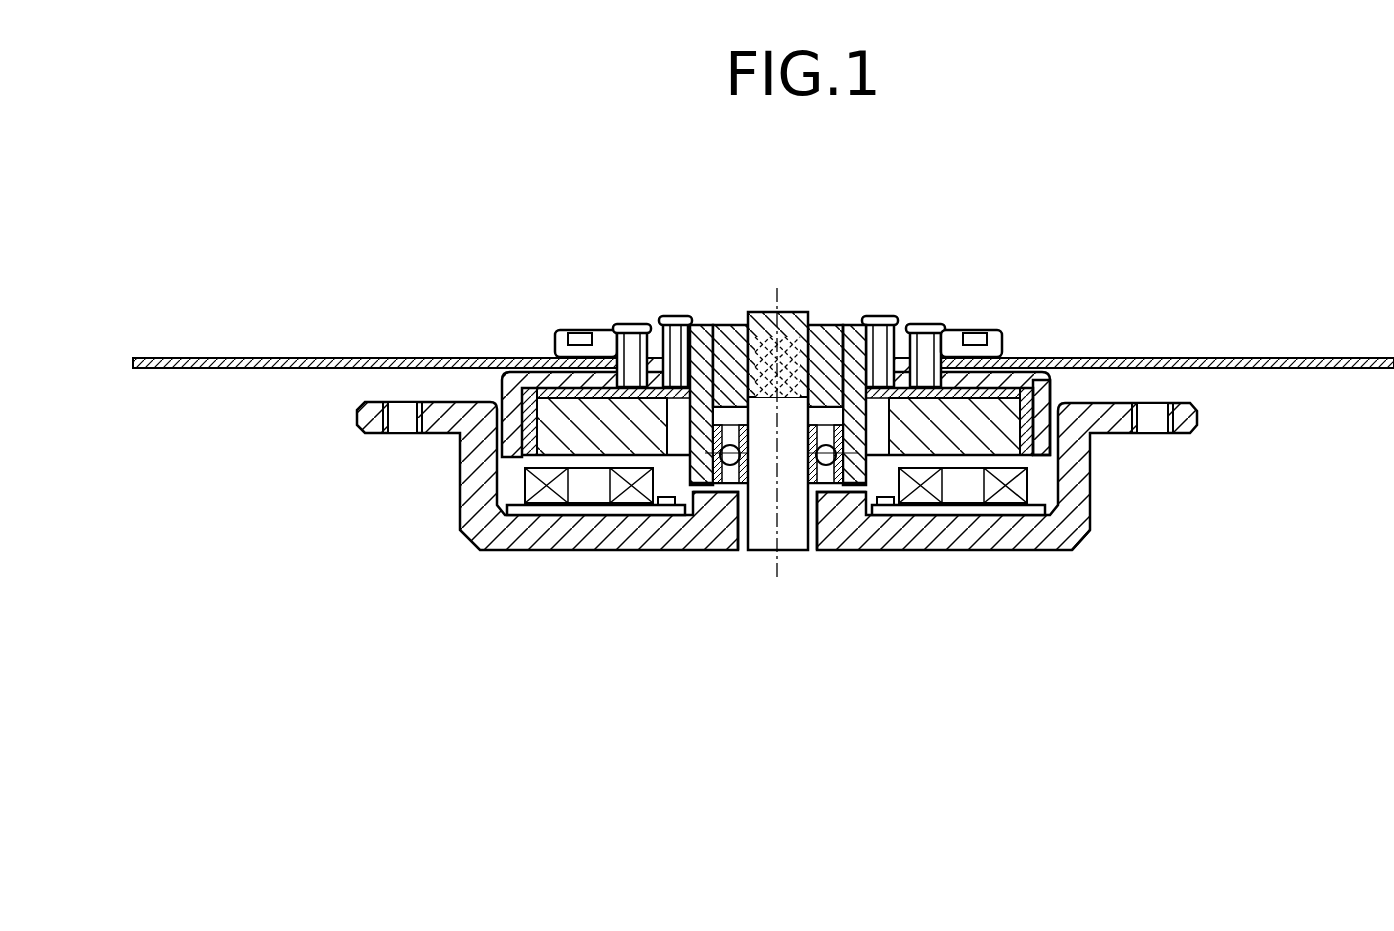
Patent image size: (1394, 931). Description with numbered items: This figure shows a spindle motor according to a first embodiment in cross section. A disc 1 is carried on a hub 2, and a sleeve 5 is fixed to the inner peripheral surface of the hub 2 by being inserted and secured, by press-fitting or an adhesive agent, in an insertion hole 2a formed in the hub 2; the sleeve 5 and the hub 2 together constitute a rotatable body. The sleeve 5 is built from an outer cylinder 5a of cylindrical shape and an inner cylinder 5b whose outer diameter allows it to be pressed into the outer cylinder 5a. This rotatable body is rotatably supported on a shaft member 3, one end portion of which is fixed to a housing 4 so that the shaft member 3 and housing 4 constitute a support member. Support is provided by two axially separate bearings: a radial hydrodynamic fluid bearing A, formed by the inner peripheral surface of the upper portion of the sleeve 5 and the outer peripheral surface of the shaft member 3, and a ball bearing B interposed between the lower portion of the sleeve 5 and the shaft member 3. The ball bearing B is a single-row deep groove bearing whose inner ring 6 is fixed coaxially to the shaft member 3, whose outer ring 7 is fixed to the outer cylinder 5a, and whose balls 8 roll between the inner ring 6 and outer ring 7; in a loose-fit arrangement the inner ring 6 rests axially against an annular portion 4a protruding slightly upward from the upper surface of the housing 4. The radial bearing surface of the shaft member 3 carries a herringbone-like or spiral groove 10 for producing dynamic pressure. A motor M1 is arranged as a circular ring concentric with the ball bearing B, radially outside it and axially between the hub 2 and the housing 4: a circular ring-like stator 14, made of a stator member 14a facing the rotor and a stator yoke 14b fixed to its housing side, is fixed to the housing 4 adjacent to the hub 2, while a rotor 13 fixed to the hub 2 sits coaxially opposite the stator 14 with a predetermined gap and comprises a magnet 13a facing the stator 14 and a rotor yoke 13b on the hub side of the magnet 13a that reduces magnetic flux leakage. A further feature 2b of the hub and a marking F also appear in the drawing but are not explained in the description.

The disc 1 is at (1386, 356).
The hub 2 is at (1017, 372).
The insertion hole 2a is at (851, 326).
The outer wall of rotor yoke 2b is at (1046, 372).
The shaft member 3 is at (806, 313).
The housing 4 is at (627, 551).
The annular portion 4a is at (738, 494).
The sleeve 5 is at (658, 232).
The outer cylinder 5a is at (692, 324).
The inner cylinder 5b is at (722, 324).
The inner ring 6 is at (813, 440).
The outer ring 7 is at (843, 470).
The balls 8 is at (827, 463).
The groove for producing dynamic pressure 10 is at (776, 288).
The rotor 13 is at (1191, 455).
The magnet 13a is at (1028, 472).
The rotor yoke 13b is at (1025, 455).
The stator 14 is at (1191, 545).
The stator member 14a is at (1046, 513).
The stator yoke 14b is at (1073, 553).
The hydrodynamic fluid bearing A is at (757, 323).
The ball bearing B is at (803, 620).
The force direction F is at (789, 470).
The motor M1 is at (1258, 470).